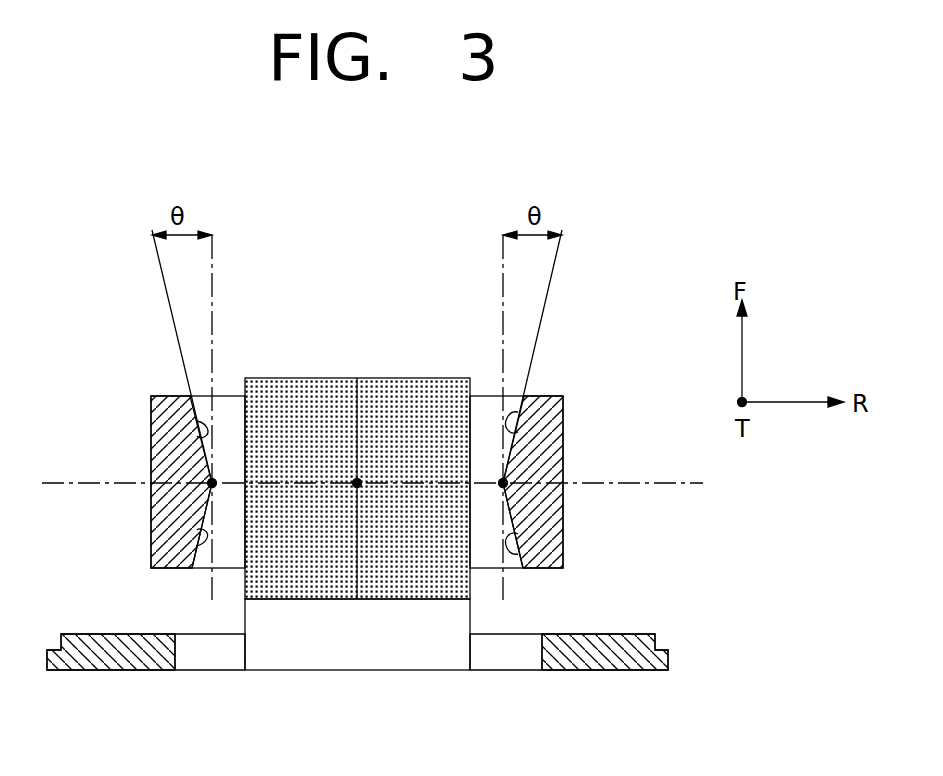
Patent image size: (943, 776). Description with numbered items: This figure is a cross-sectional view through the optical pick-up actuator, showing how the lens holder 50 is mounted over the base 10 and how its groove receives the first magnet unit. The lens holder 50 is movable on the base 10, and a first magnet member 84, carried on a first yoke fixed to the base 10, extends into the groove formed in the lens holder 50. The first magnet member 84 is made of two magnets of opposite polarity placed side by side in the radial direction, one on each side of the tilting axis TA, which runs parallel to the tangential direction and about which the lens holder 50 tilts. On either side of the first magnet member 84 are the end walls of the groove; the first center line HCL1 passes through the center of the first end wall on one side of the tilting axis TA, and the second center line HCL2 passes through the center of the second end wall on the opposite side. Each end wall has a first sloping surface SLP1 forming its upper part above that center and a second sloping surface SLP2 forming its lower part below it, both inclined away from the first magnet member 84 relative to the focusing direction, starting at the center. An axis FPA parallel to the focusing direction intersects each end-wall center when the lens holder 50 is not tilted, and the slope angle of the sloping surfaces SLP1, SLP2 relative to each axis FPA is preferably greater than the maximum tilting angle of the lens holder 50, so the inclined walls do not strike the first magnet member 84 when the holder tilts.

The lens holder 50 is at (151, 398).
The first magnet member 84 is at (290, 392).
The base 10 is at (622, 662).
The axis parallel to the focusing direction FPA is at (355, 400).
The tilting axis TA is at (357, 483).
The first center line HCL1 is at (190, 513).
The second center line HCL2 is at (528, 468).
The first sloping surface SLP1 is at (197, 421).
The second sloping surface SLP2 is at (196, 546).